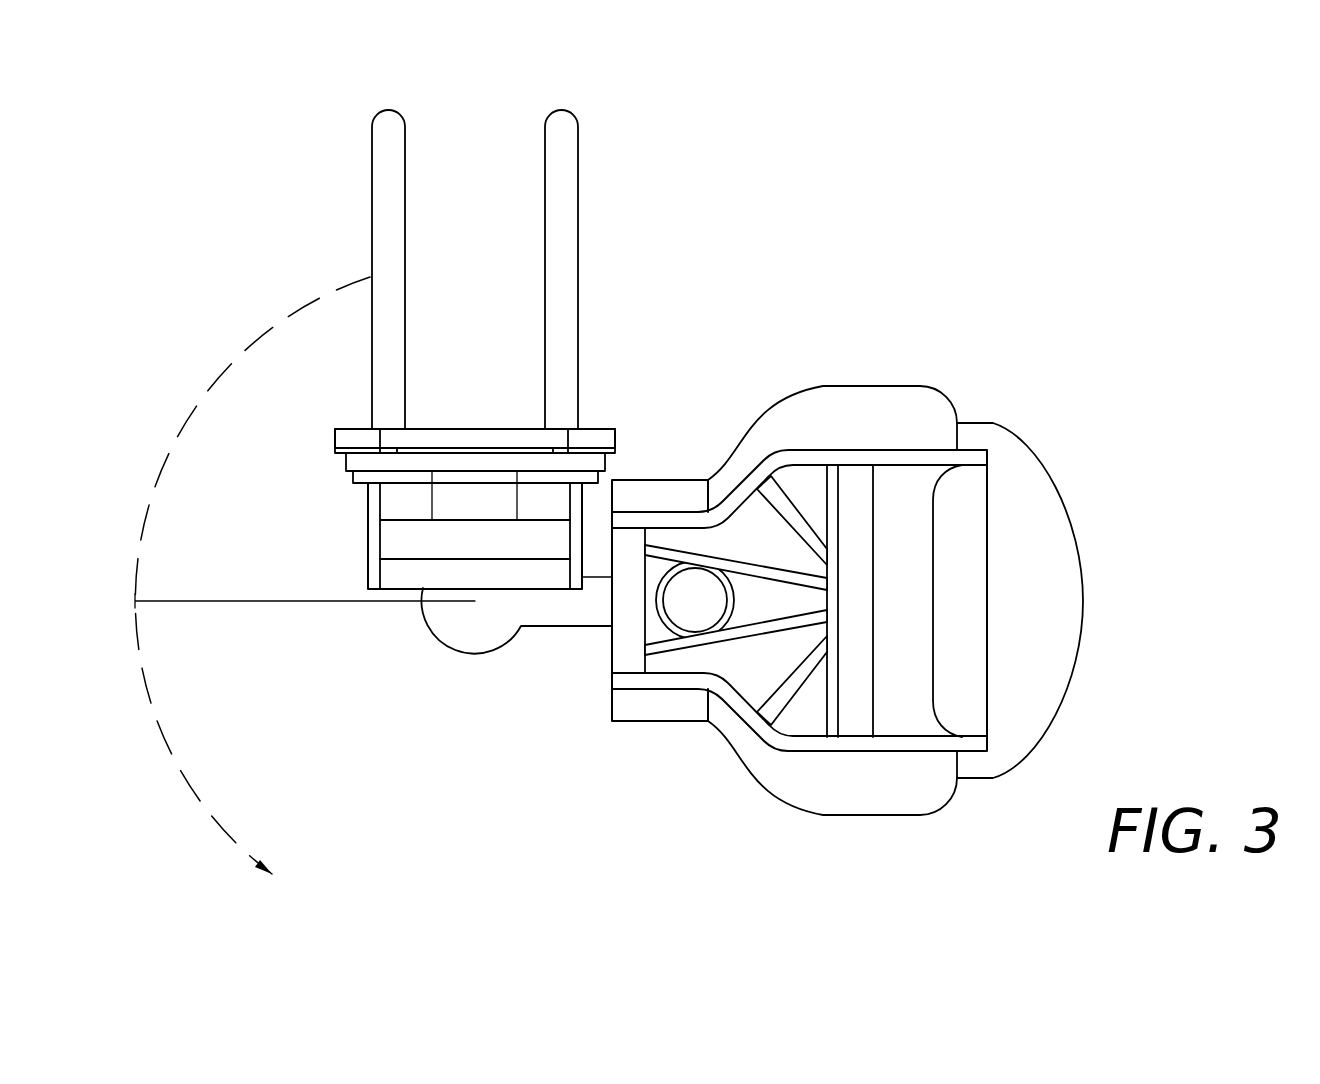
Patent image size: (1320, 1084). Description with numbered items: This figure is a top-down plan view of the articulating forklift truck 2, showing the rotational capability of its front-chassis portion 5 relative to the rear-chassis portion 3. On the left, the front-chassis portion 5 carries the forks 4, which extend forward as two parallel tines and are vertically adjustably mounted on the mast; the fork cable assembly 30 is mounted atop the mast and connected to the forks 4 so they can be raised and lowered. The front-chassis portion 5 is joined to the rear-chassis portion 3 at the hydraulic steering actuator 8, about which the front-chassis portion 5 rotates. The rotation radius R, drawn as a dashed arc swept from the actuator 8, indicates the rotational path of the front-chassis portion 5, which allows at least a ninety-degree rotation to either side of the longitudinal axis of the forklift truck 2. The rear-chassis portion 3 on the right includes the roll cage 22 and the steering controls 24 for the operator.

The articulating forklift truck 2 is at (1192, 126).
The rear-chassis portion 3 is at (981, 361).
The forks 4 is at (545, 163).
The front-chassis portion 5 is at (307, 196).
The hydraulic steering actuator 8 is at (445, 618).
The roll cage 22 is at (920, 450).
The steering controls (steering wheel) 24 is at (648, 603).
The fork cable assembly 30 is at (333, 442).